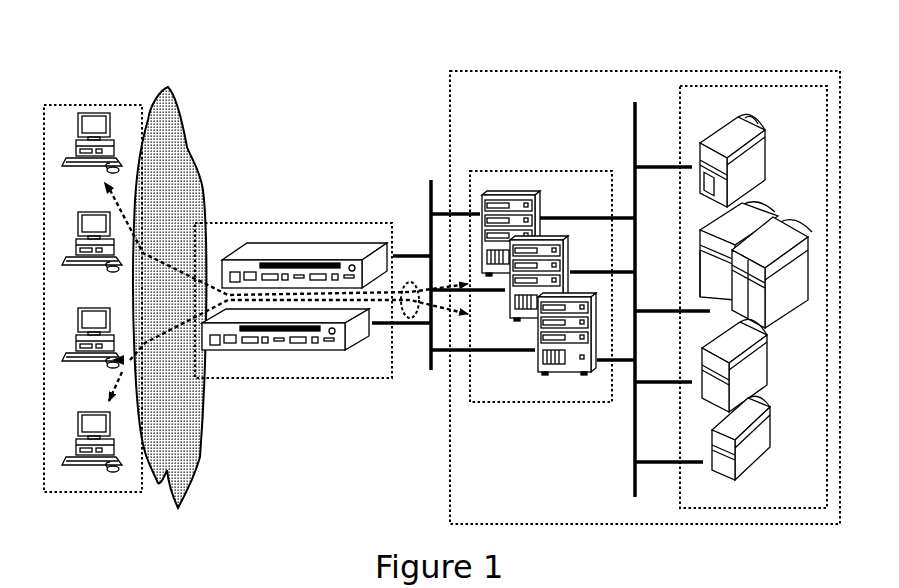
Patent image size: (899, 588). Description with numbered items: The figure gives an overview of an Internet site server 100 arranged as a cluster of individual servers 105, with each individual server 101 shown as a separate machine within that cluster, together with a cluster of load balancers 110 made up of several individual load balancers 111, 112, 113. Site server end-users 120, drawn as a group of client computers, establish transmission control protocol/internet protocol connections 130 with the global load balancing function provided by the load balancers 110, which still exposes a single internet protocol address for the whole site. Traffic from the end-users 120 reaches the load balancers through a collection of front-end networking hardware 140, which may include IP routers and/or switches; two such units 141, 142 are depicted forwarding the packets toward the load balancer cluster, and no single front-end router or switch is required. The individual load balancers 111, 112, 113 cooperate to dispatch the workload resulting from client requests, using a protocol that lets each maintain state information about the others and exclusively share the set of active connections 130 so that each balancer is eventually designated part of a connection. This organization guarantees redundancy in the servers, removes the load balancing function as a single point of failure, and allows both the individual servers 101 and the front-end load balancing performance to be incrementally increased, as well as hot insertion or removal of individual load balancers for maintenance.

The Internet site server 100 is at (594, 69).
The individual servers 101 is at (734, 488).
The cluster of individual servers 105 is at (753, 291).
The load balancers 110 is at (539, 278).
The individual load balancer 111 is at (544, 380).
The individual load balancer 112 is at (510, 322).
The individual load balancer 113 is at (481, 192).
The end-users 120 is at (84, 103).
The TCP/IP connections 130 is at (412, 280).
The front-end networking hardware 140 is at (294, 291).
The network device 141 is at (259, 354).
The network device 142 is at (374, 285).